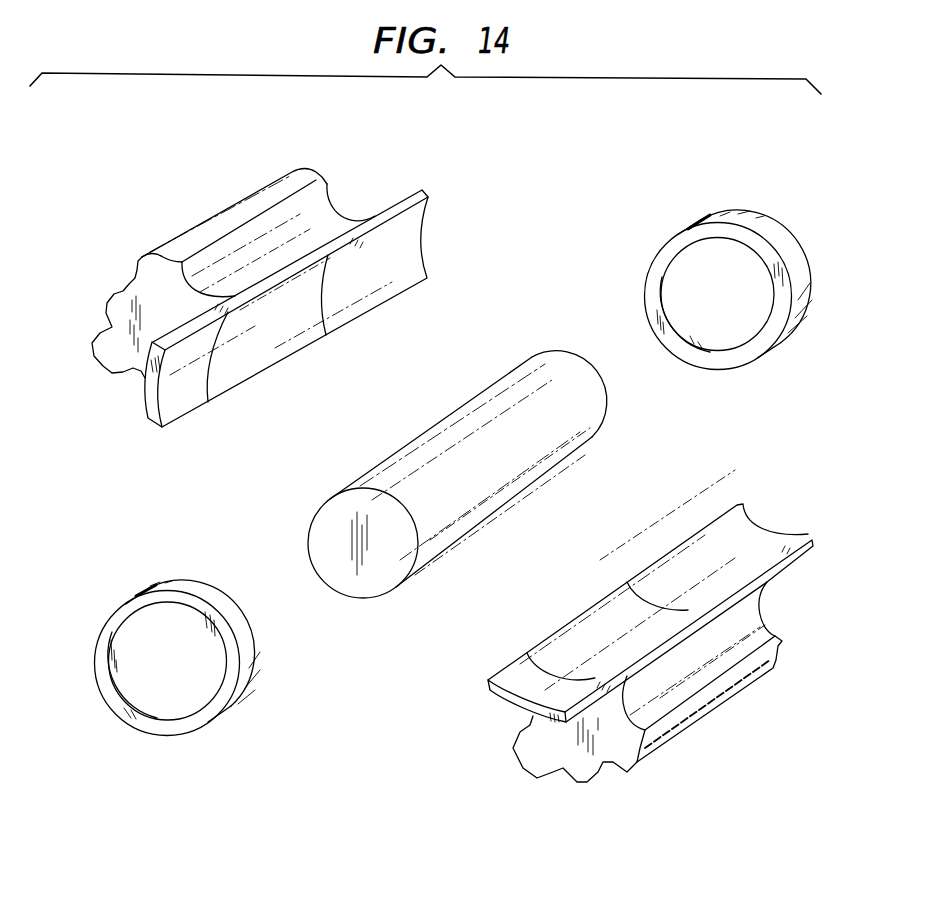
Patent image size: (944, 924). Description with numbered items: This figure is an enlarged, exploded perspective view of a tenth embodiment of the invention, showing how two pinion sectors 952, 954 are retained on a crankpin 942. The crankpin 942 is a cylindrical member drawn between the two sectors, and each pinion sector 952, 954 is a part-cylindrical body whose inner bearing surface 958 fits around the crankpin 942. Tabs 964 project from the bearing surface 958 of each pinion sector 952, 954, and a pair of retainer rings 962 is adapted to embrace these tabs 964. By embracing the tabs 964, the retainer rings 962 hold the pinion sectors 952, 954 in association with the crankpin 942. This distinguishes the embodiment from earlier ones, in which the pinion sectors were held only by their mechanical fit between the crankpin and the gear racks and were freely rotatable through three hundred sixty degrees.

The crankpin 942 is at (457, 527).
The pinion sector 952 is at (733, 714).
The pinion sector 954 is at (317, 168).
The bearing surface 958 is at (265, 343).
The retainer ring 962 is at (718, 362).
The tab 964 is at (401, 212).